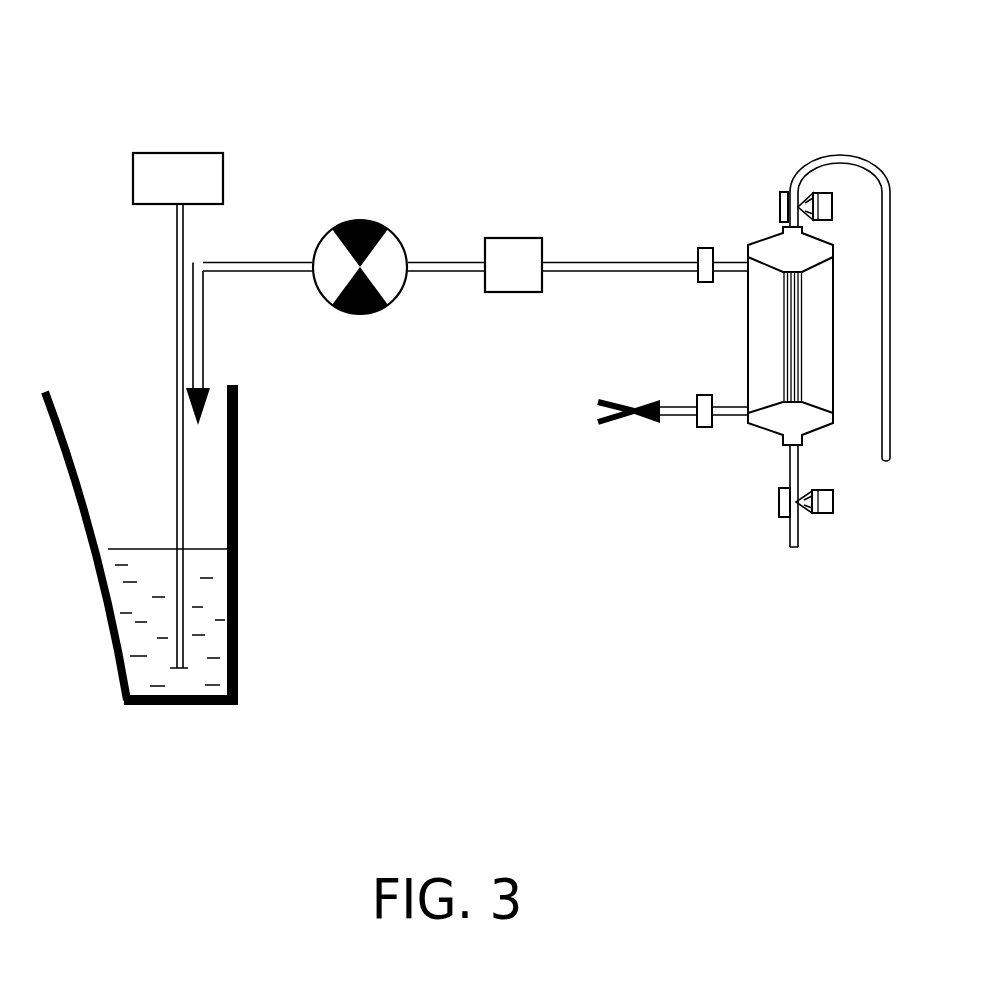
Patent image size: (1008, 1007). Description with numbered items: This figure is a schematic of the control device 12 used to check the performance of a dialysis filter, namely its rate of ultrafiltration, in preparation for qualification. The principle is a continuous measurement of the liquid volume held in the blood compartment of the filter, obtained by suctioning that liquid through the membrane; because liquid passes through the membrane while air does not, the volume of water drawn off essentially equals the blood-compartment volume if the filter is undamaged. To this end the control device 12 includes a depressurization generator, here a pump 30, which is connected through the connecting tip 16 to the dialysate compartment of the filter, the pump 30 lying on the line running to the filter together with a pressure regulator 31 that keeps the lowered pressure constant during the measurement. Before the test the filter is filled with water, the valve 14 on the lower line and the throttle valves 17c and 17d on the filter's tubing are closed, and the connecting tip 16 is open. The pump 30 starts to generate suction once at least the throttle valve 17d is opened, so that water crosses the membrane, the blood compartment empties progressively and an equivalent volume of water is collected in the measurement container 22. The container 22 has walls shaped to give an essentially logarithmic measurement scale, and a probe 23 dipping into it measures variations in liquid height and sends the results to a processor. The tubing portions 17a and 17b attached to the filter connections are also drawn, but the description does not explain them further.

The control device 12 is at (546, 122).
The valve 14 is at (703, 424).
The connecting tip 16 is at (704, 262).
The loop tubing 17a is at (808, 170).
The lower tubing 17b is at (793, 465).
The throttle valve 17c is at (826, 513).
The throttle valve 17d is at (823, 193).
The measurement container 22 is at (118, 503).
The probe 23 is at (208, 182).
The pump 30 is at (387, 297).
The pressure regulator 31 is at (505, 250).